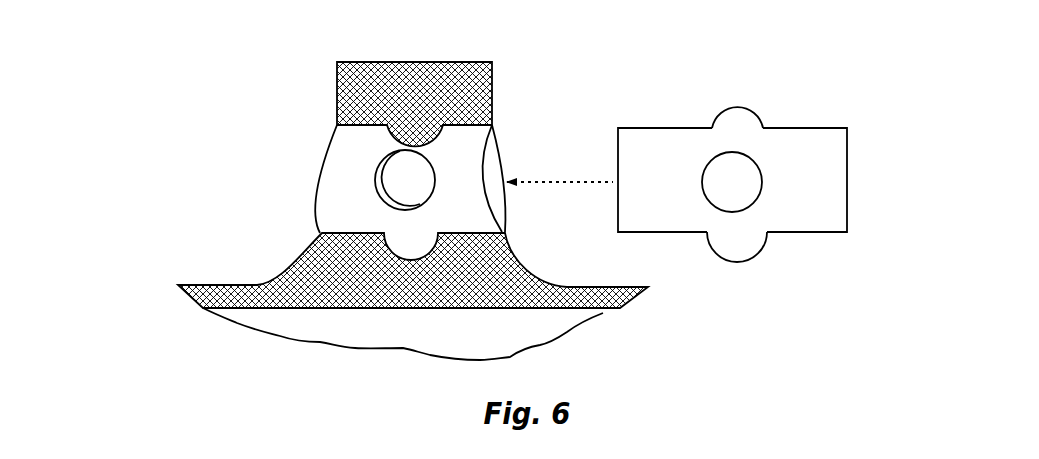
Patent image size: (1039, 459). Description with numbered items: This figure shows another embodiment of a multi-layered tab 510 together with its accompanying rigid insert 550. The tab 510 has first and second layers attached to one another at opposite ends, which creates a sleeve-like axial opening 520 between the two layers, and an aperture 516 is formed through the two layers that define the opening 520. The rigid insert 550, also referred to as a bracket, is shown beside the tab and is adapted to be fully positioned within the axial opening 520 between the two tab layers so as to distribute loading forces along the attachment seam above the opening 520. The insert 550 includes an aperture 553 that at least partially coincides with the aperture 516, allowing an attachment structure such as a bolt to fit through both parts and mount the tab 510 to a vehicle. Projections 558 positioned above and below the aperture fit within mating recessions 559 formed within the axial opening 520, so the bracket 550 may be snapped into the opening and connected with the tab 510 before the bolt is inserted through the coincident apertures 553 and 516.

The tab 510 is at (517, 90).
The aperture 516 is at (412, 175).
The axial opening 520 is at (490, 158).
The rigid insert 550 is at (830, 100).
The aperture 553 is at (736, 181).
The projections 558 is at (742, 122).
The mating recessions 559 is at (405, 115).